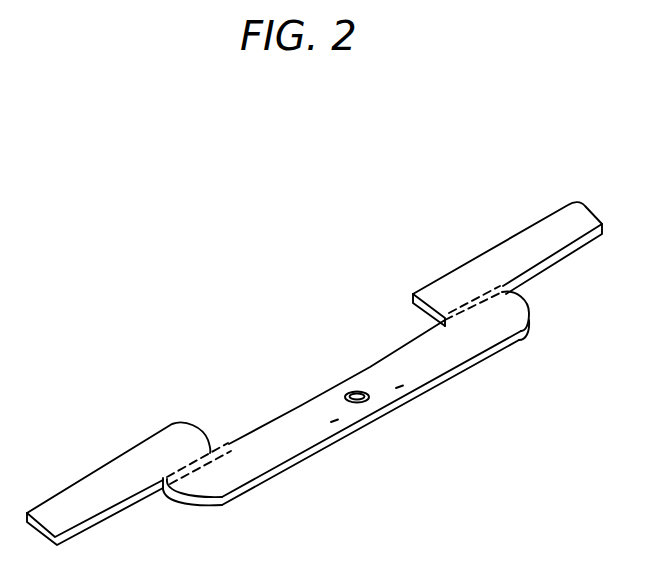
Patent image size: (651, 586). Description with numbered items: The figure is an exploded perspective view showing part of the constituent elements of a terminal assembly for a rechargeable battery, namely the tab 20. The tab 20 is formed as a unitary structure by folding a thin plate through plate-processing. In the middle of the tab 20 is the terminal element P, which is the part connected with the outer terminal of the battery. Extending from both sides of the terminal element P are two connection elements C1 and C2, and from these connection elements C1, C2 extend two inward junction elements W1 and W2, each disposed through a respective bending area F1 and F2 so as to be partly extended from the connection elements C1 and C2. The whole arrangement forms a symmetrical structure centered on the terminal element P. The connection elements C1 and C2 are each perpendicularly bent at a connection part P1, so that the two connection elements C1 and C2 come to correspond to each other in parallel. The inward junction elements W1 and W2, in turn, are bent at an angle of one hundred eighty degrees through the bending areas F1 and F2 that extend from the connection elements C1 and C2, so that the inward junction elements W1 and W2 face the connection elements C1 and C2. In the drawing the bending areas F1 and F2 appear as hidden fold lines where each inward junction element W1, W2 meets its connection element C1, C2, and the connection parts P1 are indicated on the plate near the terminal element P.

The tab 20 is at (361, 299).
The connection part P1 is at (391, 385).
The bending area F1 is at (215, 447).
The bending area F2 is at (502, 292).
The inward junction element W1 is at (172, 419).
The inward junction element W2 is at (562, 200).
The connection element C1 is at (349, 438).
The connection element C2 is at (544, 325).
The terminal element P is at (424, 396).